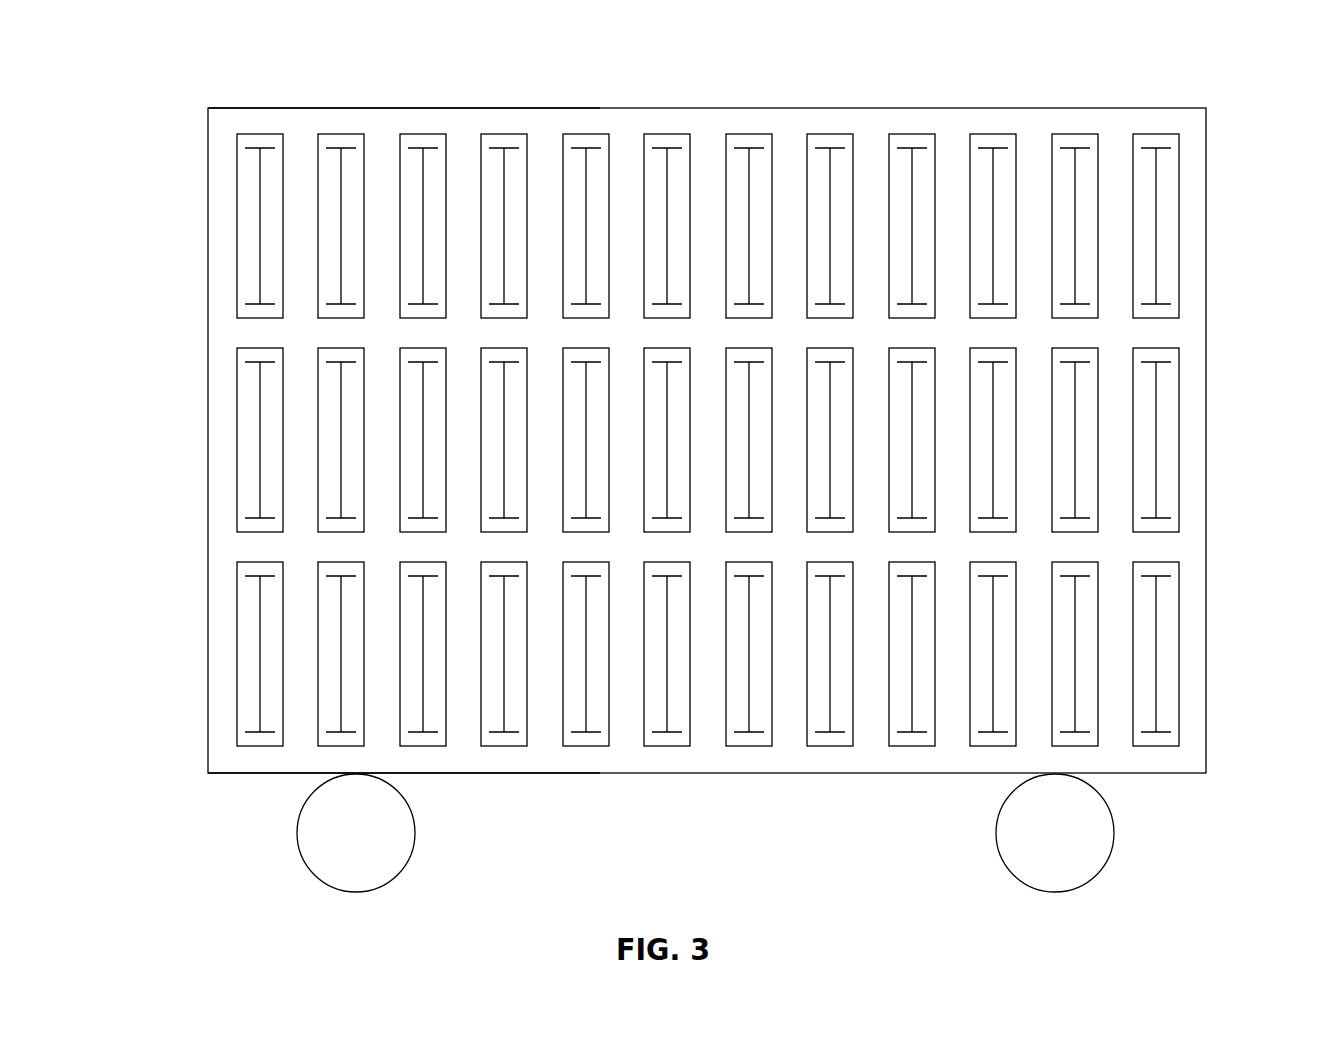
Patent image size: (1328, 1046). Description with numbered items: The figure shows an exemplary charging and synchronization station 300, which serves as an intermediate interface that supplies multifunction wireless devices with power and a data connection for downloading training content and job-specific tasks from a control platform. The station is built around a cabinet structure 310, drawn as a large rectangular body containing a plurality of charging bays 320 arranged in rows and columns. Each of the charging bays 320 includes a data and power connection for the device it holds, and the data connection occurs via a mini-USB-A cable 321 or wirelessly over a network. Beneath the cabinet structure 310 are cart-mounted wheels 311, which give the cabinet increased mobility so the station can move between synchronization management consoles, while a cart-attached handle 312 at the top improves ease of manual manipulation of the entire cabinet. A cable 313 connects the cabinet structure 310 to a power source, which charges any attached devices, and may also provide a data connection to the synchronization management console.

The charging and synchronization station 300 is at (1283, 70).
The cabinet structure 310 is at (823, 108).
The cart-mounted wheels 311 is at (415, 833).
The cart-attached handle 312 is at (208, 108).
The cable 313 is at (120, 773).
The plurality of charging bays 320 is at (756, 406).
The mini-USB-A cable 321 is at (1178, 242).